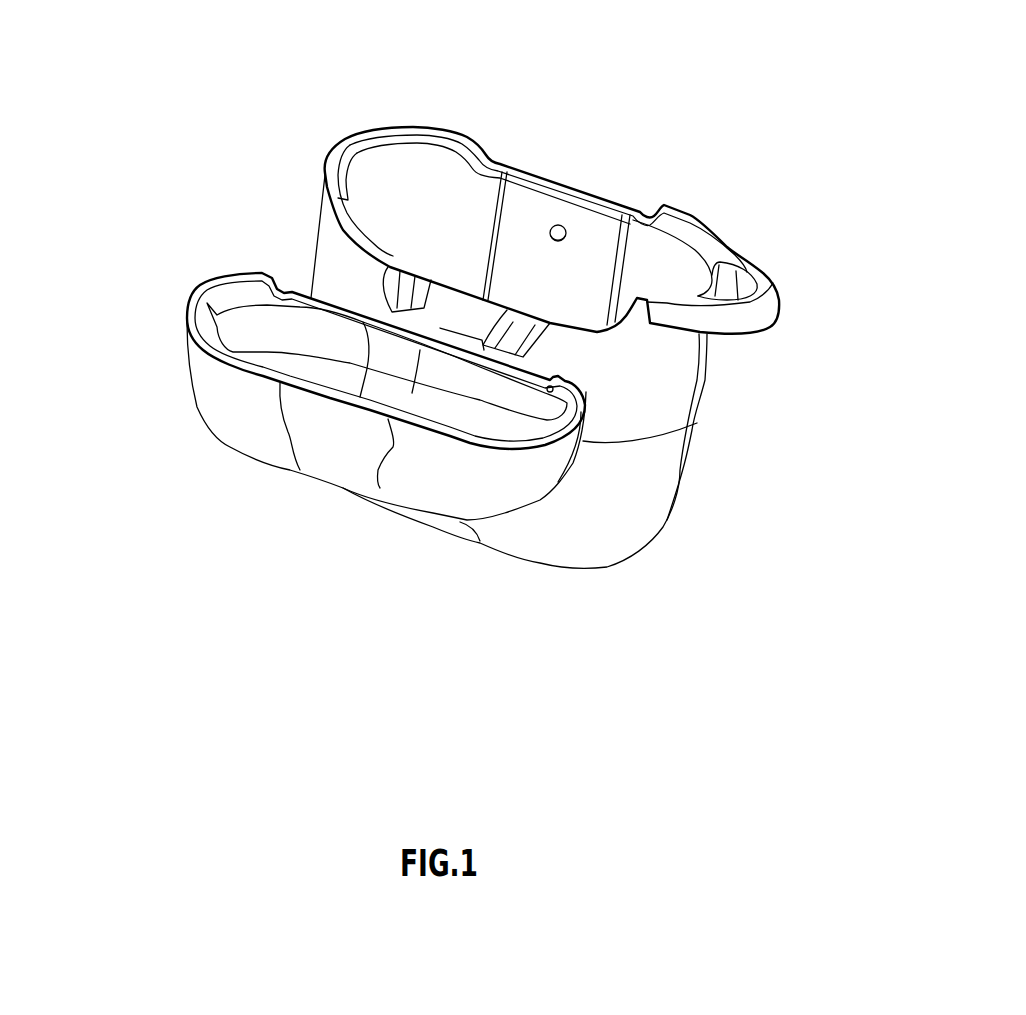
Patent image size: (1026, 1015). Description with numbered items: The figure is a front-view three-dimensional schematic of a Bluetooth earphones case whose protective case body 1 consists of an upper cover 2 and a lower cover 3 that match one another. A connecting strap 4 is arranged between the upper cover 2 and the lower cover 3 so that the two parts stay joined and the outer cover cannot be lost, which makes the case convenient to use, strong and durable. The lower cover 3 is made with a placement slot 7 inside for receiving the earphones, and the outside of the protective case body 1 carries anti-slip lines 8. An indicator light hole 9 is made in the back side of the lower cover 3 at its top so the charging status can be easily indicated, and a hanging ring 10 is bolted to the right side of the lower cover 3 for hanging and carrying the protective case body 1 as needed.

The protective case body 1 is at (113, 178).
The upper cover 2 is at (411, 448).
The lower cover 3 is at (510, 174).
The connecting strap 4 is at (530, 335).
The placement slot 7 is at (497, 217).
The anti-slip lines 8 is at (433, 503).
The indicator light hole 9 is at (563, 228).
The hanging ring 10 is at (794, 292).